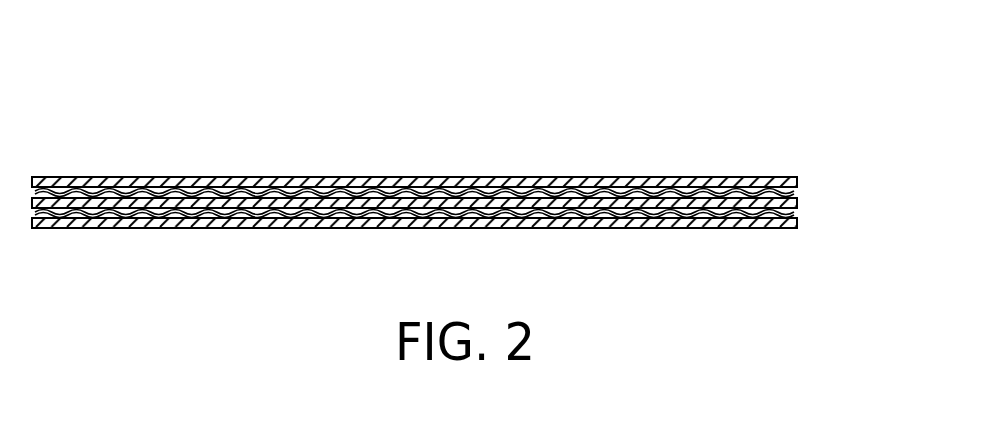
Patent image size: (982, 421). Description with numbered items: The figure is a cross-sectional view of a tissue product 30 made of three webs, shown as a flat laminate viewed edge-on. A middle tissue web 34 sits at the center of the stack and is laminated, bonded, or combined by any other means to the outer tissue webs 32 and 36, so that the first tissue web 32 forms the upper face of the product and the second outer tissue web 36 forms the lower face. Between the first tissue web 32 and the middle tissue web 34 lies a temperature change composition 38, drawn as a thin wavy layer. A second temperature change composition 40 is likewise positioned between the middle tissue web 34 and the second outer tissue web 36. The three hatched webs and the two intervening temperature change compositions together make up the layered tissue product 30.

The tissue product 30 is at (478, 93).
The first tissue web 32 is at (740, 177).
The middle tissue web 34 is at (797, 203).
The second outer tissue web 36 is at (748, 232).
The temperature change composition 38 is at (790, 192).
The temperature change composition 40 is at (790, 215).